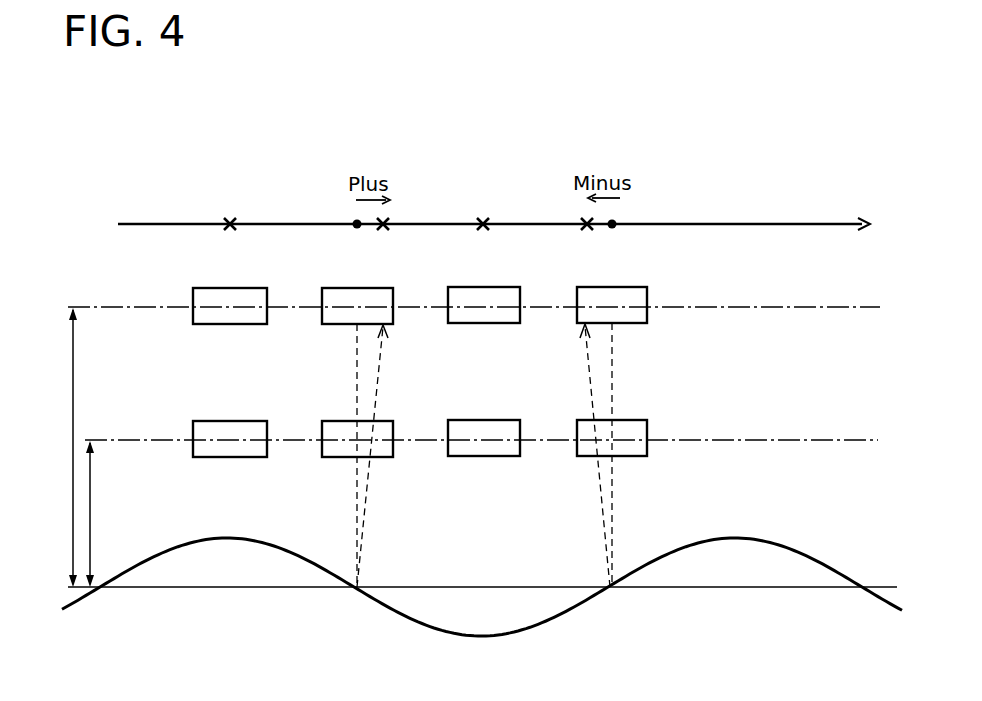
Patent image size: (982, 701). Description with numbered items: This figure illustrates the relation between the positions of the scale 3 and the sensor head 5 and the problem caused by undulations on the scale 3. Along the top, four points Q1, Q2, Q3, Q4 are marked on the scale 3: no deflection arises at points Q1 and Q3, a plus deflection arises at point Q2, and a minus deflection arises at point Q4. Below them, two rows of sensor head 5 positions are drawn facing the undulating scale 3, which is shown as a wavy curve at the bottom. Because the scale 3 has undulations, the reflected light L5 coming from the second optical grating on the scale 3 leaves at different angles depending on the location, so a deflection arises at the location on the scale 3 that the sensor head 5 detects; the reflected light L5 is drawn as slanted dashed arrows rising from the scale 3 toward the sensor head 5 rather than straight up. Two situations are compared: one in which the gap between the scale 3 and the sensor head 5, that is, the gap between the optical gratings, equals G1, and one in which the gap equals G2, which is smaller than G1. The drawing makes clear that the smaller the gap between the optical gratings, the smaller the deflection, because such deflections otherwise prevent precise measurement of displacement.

The scale 3 is at (822, 560).
The sensor head 5 is at (197, 288).
The reflected light L5 is at (378, 380).
The gap G1 is at (73, 398).
The gap G2 is at (90, 512).
The point Q1 is at (228, 241).
The point Q2 is at (367, 241).
The point Q3 is at (482, 241).
The point Q4 is at (594, 241).